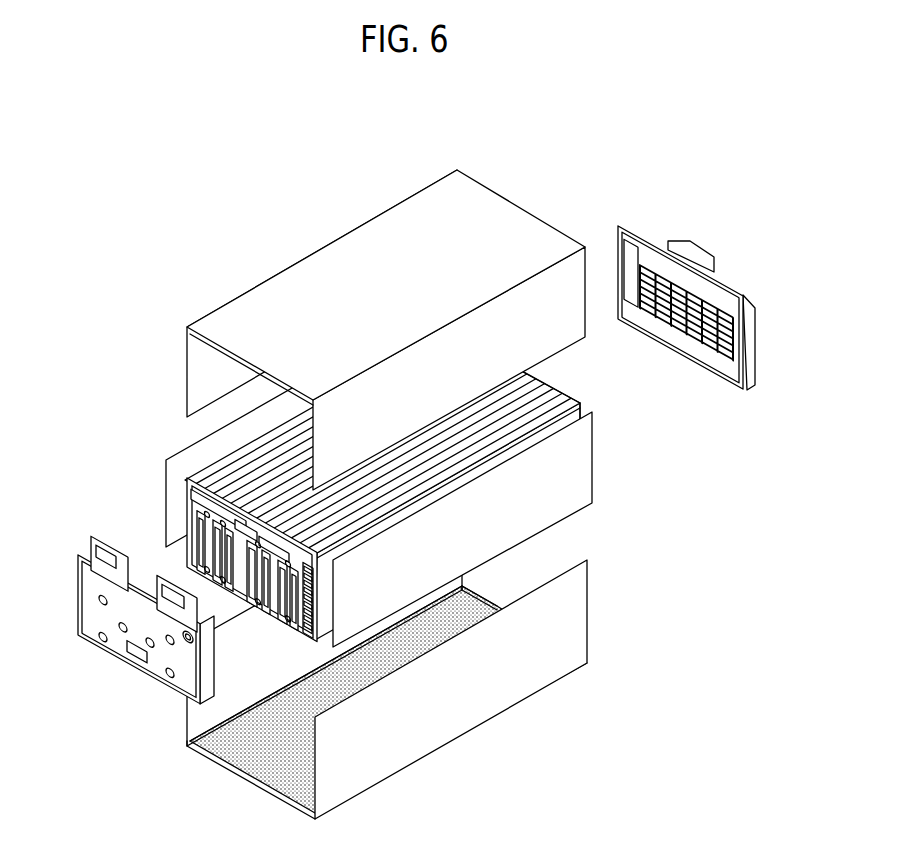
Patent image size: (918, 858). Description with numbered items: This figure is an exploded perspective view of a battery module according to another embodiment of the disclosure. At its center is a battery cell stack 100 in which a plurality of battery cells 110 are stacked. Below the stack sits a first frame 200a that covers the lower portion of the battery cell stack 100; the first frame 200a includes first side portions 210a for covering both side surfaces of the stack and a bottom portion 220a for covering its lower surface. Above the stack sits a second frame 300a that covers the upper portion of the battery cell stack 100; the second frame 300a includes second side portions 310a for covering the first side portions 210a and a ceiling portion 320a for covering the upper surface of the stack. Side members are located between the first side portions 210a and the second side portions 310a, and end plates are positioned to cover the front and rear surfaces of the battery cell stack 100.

The battery cell stack 100 is at (435, 485).
The battery cells 110 is at (507, 422).
The first frame 200a is at (439, 654).
The first side portions 210a is at (350, 761).
The bottom portion 220a is at (473, 615).
The second frame 300a is at (384, 330).
The second side portions 310a is at (327, 438).
The ceiling portion 320a is at (332, 272).